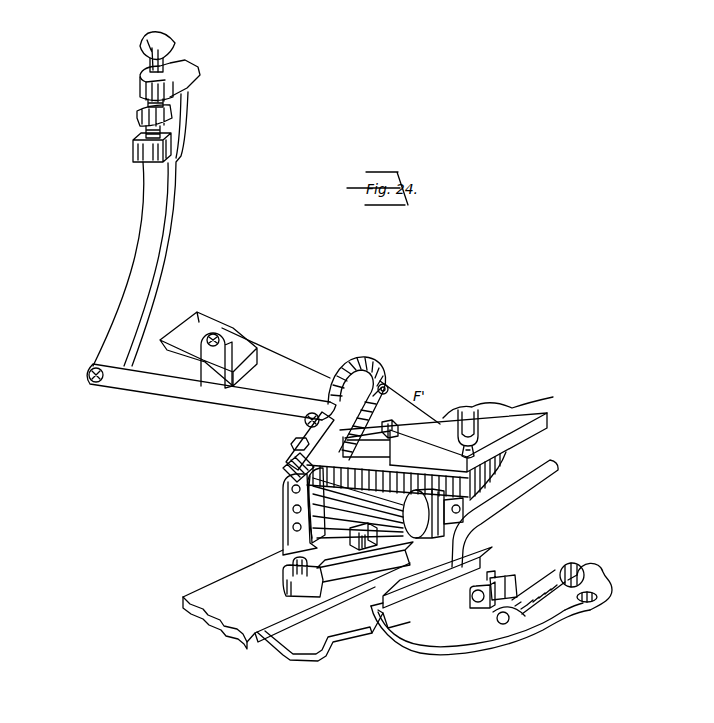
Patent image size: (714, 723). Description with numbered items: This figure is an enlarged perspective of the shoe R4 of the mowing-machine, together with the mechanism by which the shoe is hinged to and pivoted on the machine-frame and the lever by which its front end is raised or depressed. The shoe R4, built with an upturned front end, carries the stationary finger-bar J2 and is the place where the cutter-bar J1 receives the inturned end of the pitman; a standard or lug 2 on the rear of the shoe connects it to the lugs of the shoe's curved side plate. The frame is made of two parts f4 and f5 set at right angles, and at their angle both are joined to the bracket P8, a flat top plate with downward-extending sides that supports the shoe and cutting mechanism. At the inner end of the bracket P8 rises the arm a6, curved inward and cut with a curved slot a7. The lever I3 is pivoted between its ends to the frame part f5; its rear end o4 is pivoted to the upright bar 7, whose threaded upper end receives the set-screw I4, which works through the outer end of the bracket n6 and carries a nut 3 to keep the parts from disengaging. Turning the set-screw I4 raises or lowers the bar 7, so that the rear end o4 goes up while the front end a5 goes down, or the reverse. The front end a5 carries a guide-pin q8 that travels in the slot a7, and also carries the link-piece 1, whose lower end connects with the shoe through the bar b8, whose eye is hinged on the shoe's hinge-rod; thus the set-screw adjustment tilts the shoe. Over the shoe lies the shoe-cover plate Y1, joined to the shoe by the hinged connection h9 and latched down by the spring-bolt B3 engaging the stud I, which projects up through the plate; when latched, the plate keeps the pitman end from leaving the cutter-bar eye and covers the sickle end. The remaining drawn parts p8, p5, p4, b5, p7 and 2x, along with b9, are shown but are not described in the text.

The set-screw I4 is at (161, 34).
The bracket n6 is at (192, 78).
The nut 3 is at (143, 160).
The bar 7 is at (140, 229).
The lever I3 is at (211, 399).
The rear end of lever o4 is at (87, 377).
The post bracket b9 is at (226, 334).
The frame part f5 is at (268, 341).
The arm a6 is at (347, 361).
The curved slot a7 is at (387, 387).
The link-piece 1 is at (306, 441).
The guide-pin q8 is at (298, 432).
The front end of lever a5 is at (276, 410).
The bar b8 is at (291, 466).
The bracket P8 is at (443, 456).
The frame part f4 is at (505, 412).
The spring-bolt B3 is at (561, 470).
The rod end p8 is at (507, 474).
The drum body p5 is at (387, 501).
The drum side plate p4 is at (321, 505).
The drum band b5 is at (430, 470).
The roller end p7 is at (406, 519).
The standard or lug 2 is at (285, 535).
The bracket upper part 2x is at (289, 491).
The stationary finger-bar J2 is at (298, 595).
The cutter-bar J1 is at (273, 636).
The shoe-cover plate Y1 is at (437, 577).
The shoe R4 is at (486, 622).
The stud I is at (478, 608).
The hinged connection h9 is at (535, 588).